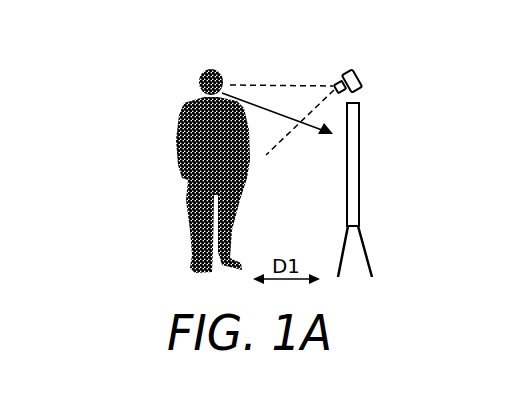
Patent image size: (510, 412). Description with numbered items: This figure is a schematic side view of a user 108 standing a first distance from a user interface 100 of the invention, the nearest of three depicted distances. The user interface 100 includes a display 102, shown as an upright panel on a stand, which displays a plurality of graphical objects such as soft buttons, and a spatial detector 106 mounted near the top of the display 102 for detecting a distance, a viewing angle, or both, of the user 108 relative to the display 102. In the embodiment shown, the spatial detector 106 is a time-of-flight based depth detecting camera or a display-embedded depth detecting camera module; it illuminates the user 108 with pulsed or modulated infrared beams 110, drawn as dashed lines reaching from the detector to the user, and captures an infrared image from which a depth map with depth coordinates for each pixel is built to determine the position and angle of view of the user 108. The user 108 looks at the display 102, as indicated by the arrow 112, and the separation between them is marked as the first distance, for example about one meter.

The user interface 100 is at (407, 72).
The display 102 is at (359, 180).
The spatial detector 106 is at (342, 74).
The user 108 is at (140, 133).
The infrared beams 110 is at (265, 84).
The arrows 112 is at (312, 125).